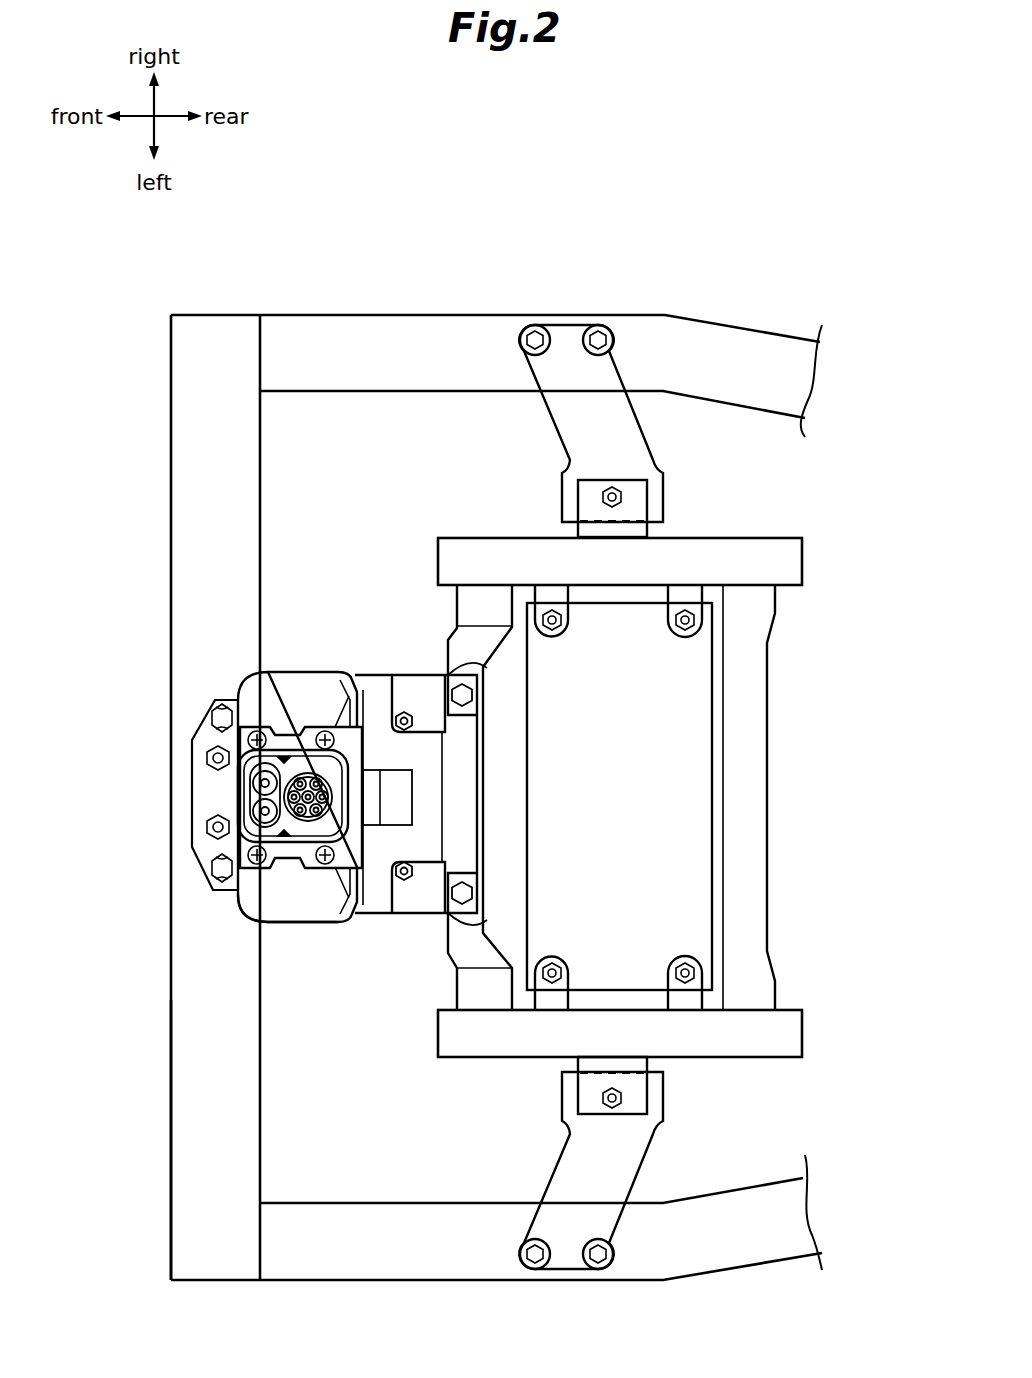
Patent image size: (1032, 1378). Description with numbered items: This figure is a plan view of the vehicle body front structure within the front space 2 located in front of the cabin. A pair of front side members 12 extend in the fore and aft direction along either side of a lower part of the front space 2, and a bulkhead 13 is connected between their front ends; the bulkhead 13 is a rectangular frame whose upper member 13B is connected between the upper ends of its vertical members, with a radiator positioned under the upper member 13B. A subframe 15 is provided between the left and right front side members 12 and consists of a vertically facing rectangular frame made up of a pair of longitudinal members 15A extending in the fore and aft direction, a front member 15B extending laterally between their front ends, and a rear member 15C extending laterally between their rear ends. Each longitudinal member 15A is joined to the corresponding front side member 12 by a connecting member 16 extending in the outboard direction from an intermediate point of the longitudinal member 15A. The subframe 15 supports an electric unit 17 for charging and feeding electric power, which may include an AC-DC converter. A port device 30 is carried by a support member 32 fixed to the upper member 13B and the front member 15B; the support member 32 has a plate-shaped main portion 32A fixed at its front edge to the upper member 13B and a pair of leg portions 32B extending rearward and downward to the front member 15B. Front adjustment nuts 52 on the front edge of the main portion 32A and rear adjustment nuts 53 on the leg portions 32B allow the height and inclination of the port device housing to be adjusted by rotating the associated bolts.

The front space 2 is at (358, 1070).
The front side member 12 is at (370, 325).
The bulkhead 13 is at (192, 363).
The upper member 13B is at (193, 1022).
The subframe 15 is at (797, 635).
The longitudinal member 15A is at (777, 548).
The front member 15B is at (482, 590).
The rear member 15C is at (750, 822).
The connecting member 16 is at (626, 462).
The electric unit 17 is at (692, 716).
The port device 30 is at (287, 748).
The support member 32 is at (247, 670).
The main portion 32A is at (288, 912).
The leg portion 32B is at (480, 668).
The front adjustment nut 52 is at (207, 827).
The rear adjustment nut 53 is at (414, 869).